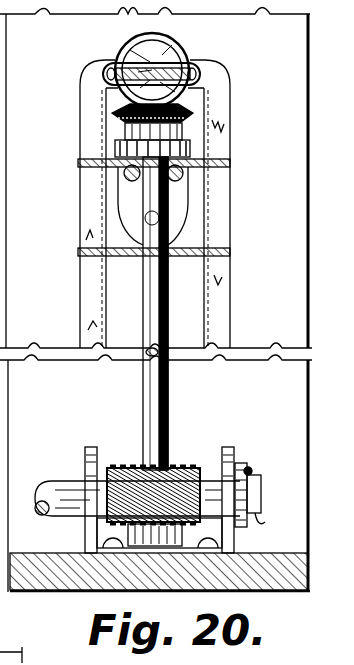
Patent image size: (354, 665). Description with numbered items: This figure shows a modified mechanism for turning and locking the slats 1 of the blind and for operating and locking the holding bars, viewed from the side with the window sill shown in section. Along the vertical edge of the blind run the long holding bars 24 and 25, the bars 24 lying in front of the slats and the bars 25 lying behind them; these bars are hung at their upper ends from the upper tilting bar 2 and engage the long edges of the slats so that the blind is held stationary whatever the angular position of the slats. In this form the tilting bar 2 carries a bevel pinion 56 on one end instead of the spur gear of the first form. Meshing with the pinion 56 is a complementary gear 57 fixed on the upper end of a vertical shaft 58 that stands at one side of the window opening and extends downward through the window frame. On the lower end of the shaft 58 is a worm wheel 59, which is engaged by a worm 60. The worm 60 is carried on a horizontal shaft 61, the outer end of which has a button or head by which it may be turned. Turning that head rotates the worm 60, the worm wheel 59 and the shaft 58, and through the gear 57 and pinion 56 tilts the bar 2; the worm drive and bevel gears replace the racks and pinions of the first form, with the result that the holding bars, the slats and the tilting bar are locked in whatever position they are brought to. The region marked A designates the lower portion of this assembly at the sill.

The slats 1 is at (210, 250).
The upper tilting bar 2 is at (181, 63).
The front holding bars 24 is at (92, 126).
The rear holding bars 25 is at (217, 113).
The bevel pinion 56 is at (185, 50).
The complementary gear 57 is at (122, 106).
The vertical shaft 58 is at (160, 382).
The worm wheel 59 is at (68, 480).
The worm 60 is at (182, 470).
The worm shaft 61 is at (57, 483).
The base A is at (293, 517).